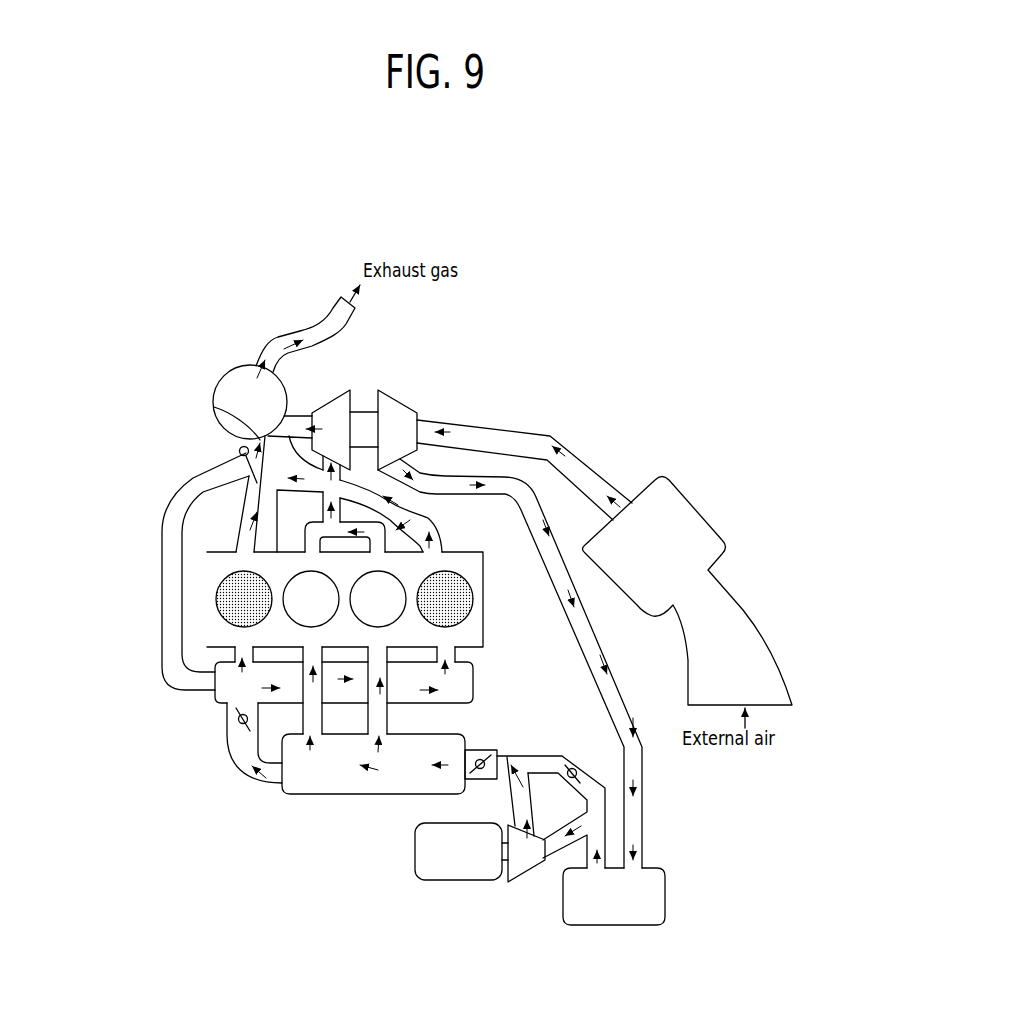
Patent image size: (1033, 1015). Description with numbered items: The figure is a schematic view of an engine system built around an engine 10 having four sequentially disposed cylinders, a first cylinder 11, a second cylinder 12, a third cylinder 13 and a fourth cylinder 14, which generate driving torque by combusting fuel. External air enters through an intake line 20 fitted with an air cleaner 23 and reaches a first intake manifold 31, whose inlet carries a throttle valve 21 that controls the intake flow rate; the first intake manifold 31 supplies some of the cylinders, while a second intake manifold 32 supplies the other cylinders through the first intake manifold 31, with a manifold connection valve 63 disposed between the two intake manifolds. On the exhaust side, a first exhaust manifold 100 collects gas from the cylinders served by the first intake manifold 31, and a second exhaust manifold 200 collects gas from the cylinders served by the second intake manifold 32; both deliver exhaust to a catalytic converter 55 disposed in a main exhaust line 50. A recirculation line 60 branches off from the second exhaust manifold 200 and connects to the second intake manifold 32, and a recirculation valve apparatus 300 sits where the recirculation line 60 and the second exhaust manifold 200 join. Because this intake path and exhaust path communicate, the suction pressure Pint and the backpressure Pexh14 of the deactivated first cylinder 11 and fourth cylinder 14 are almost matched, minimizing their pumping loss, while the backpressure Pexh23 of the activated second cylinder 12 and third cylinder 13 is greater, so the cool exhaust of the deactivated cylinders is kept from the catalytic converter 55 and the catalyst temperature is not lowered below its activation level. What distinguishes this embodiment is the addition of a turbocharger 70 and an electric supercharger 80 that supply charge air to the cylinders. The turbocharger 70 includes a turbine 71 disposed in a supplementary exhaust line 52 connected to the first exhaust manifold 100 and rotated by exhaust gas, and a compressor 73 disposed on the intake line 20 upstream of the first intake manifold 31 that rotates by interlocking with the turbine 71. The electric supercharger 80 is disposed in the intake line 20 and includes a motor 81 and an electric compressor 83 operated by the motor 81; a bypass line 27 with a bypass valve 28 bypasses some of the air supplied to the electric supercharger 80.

The engine 10 is at (192, 608).
The first cylinder 11 is at (218, 588).
The second cylinder 12 is at (297, 623).
The third cylinder 13 is at (393, 622).
The fourth cylinder 14 is at (472, 585).
The intake line 20 is at (510, 432).
The throttle valve 21 is at (486, 750).
The air cleaner 23 is at (685, 508).
The bypass line 27 is at (537, 756).
The bypass valve 28 is at (574, 768).
The first intake manifold 31 is at (320, 795).
The second intake manifold 32 is at (217, 703).
The main exhaust line 50 is at (310, 328).
The supplementary exhaust line 52 is at (292, 432).
The catalytic converter 55 is at (222, 378).
The recirculation line 60 is at (178, 508).
The manifold connection valve 63 is at (228, 730).
The turbocharger 70 is at (376, 389).
The turbine 71 is at (336, 400).
The compressor 73 is at (381, 330).
The electric supercharger 80 is at (480, 901).
The motor 81 is at (468, 882).
The electric compressor 83 is at (518, 884).
The first exhaust manifold 100 is at (438, 516).
The second exhaust manifold 200 is at (233, 538).
The recirculation valve apparatus 300 is at (240, 470).
The suction pressure Pint is at (217, 683).
The backpressure of the second and third cylinders Pexh23 is at (214, 396).
The backpressure of the first and fourth cylinders Pexh14 is at (213, 407).